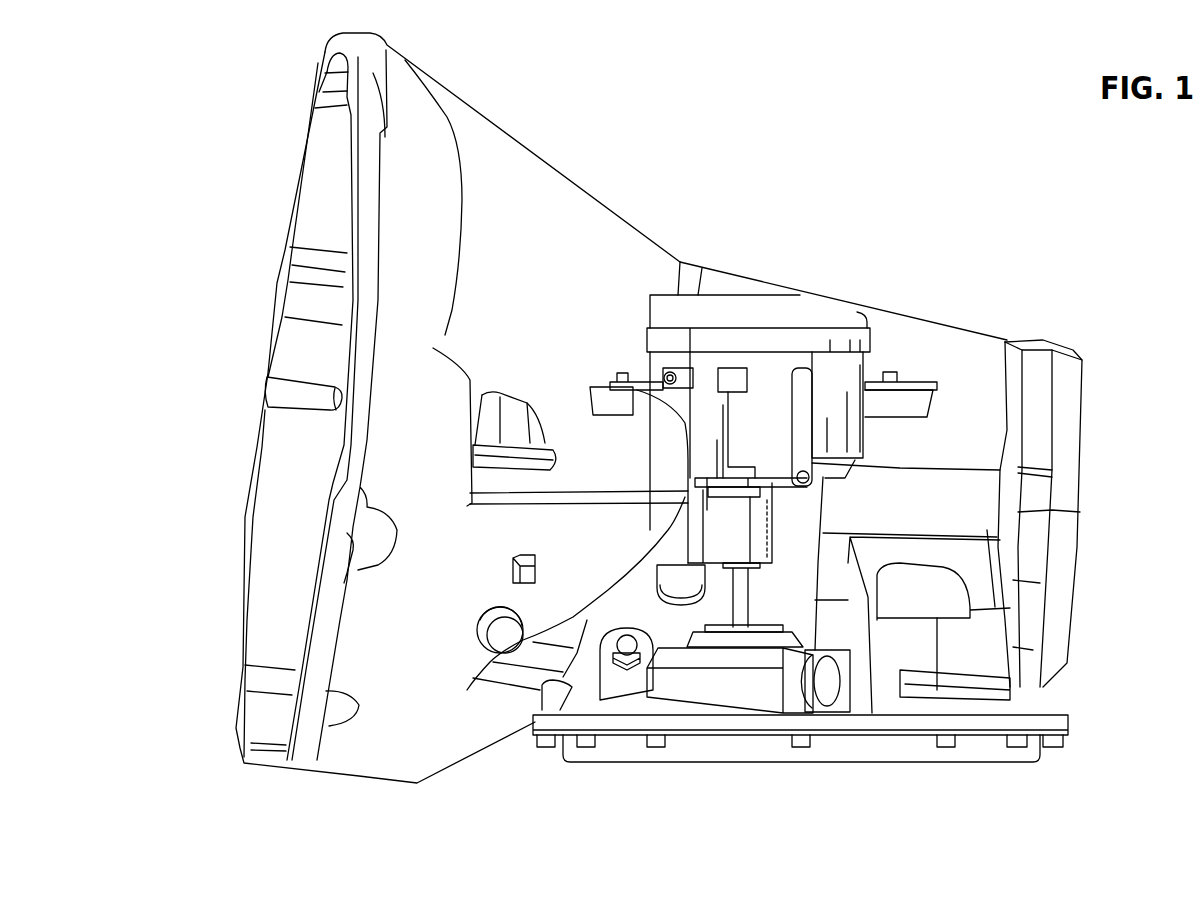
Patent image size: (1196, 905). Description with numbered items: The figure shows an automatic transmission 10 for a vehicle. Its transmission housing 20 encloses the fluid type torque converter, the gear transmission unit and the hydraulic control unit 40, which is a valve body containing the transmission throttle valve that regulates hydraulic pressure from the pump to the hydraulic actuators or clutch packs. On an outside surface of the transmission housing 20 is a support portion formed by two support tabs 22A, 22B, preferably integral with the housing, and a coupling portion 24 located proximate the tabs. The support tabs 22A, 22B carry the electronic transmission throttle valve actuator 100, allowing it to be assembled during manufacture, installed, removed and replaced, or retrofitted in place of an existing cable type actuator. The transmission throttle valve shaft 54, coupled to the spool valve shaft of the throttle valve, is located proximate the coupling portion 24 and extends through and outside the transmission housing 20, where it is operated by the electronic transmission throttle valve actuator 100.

The automatic transmission 10 is at (882, 172).
The transmission housing 20 is at (900, 303).
The electronic transmission throttle valve actuator 100 is at (747, 302).
The support tab 22A is at (903, 403).
The support tab 22B is at (615, 403).
The coupling portion 24 is at (657, 680).
The transmission throttle valve shaft 54 is at (743, 615).
The hydraulic control unit 40 is at (973, 750).